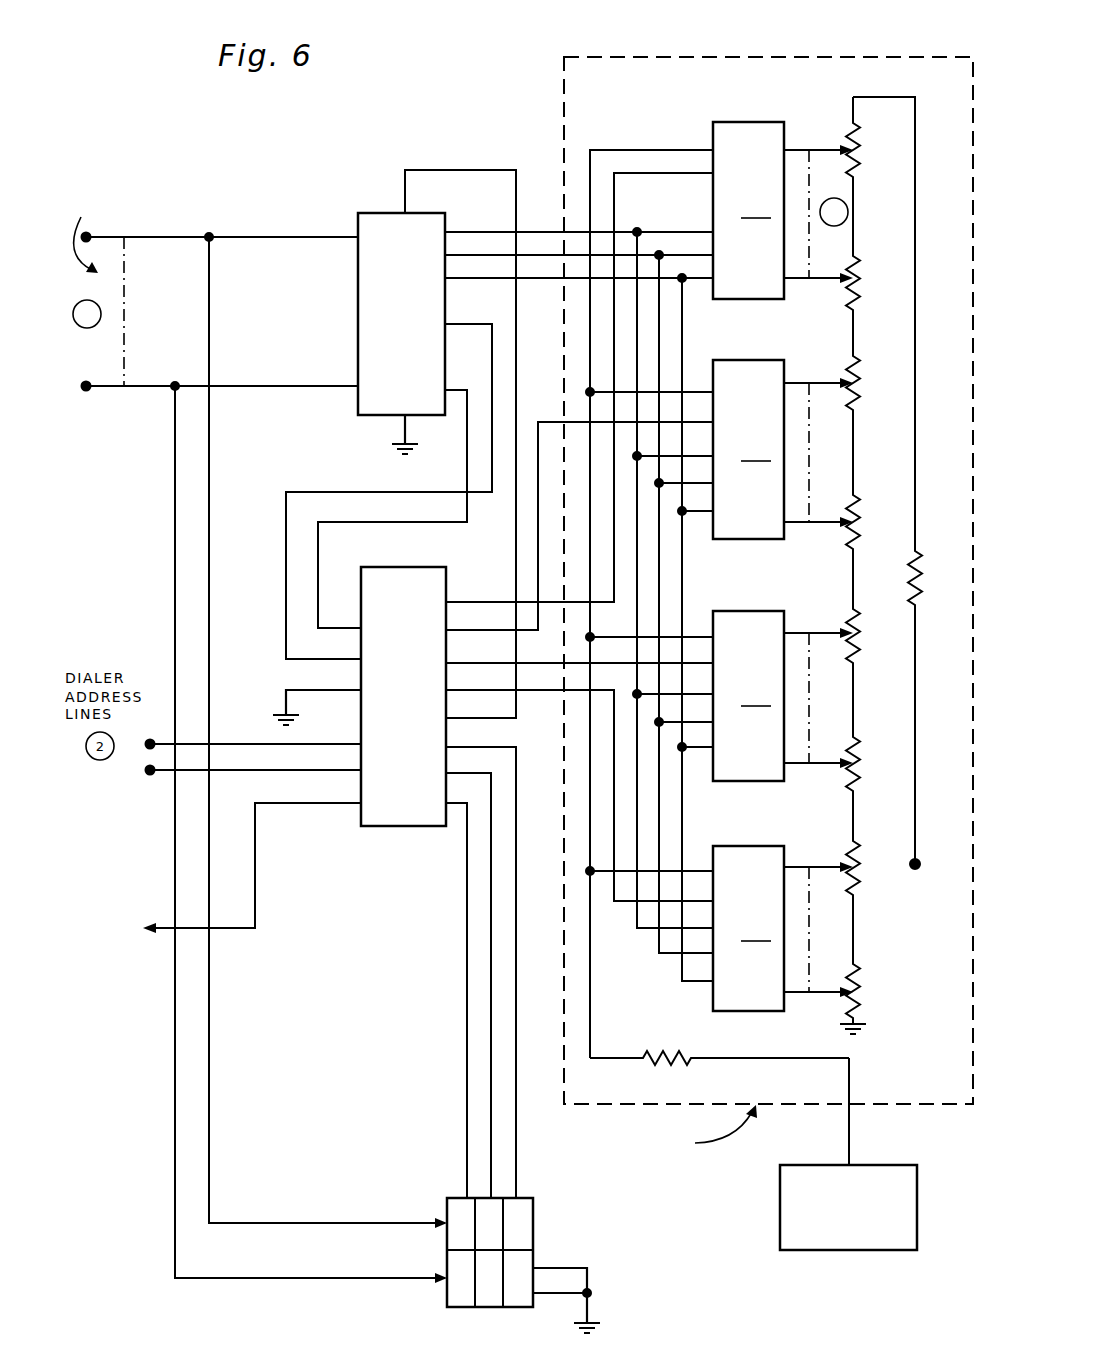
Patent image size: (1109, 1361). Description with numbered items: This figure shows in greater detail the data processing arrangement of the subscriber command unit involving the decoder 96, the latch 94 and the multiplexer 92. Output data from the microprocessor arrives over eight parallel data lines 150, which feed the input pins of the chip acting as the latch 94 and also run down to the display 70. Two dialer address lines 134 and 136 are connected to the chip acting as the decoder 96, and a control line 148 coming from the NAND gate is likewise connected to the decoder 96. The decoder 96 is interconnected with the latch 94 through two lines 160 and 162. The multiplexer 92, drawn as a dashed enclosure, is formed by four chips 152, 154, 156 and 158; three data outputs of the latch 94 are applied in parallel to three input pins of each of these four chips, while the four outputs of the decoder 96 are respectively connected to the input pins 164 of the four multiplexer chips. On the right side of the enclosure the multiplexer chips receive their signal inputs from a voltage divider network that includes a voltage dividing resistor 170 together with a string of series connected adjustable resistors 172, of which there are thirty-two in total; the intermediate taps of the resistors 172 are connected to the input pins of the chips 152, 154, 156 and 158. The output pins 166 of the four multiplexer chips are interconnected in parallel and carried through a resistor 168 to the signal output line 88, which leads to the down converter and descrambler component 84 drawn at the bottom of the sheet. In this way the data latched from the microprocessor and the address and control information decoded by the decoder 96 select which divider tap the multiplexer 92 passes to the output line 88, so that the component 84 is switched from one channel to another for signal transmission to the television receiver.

The display 70 is at (542, 1227).
The down converter and descrambler component 84 is at (877, 1251).
The output line 88 is at (850, 1138).
The multiplexer 92 is at (817, 52).
The latch 94 is at (375, 222).
The decoder 96 is at (403, 817).
The dialer address line 134 is at (242, 743).
The dialer address line 136 is at (158, 774).
The control line 148 is at (163, 934).
The data lines 150 is at (87, 404).
The multiplexer chip 152 is at (783, 210).
The multiplexer chip 154 is at (783, 449).
The multiplexer chip 156 is at (783, 696).
The multiplexer chip 158 is at (783, 928).
The line 160 is at (285, 541).
The line 162 is at (319, 551).
The input pins 164 is at (712, 172).
The output pins 166 is at (712, 148).
The resistor 168 is at (672, 1055).
The voltage dividing resistor 170 is at (916, 527).
The adjustable resistors 172 is at (857, 985).